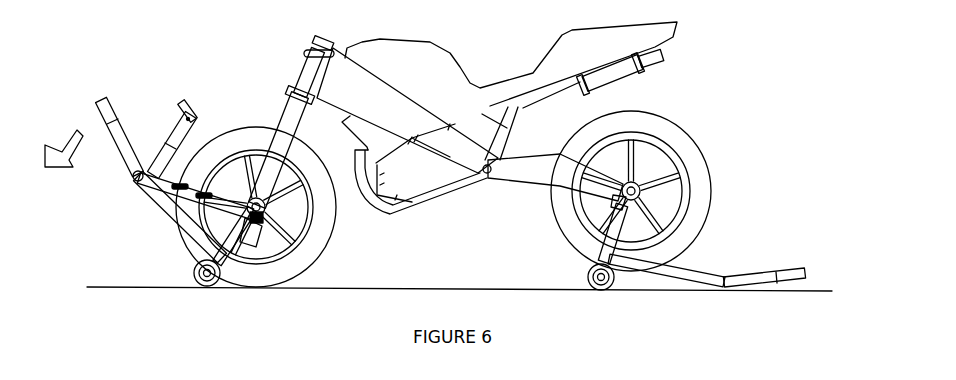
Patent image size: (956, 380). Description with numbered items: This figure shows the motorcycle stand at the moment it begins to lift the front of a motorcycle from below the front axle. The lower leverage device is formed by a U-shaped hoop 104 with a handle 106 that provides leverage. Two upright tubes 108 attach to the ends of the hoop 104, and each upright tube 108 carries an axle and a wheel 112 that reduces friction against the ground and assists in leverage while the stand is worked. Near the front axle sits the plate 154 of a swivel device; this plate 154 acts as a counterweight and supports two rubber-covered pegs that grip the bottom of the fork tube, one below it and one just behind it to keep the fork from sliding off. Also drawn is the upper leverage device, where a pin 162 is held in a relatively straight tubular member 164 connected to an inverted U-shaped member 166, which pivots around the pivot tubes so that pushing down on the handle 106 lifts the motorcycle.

The U-shaped hoop 104 is at (143, 193).
The handle 106 is at (108, 99).
The upright tube 108 is at (235, 249).
The wheel 112 is at (203, 286).
The plate 154 is at (260, 243).
The pin 162 is at (182, 103).
The tubular member 164 is at (166, 140).
The inverted U-shaped member 166 is at (172, 167).